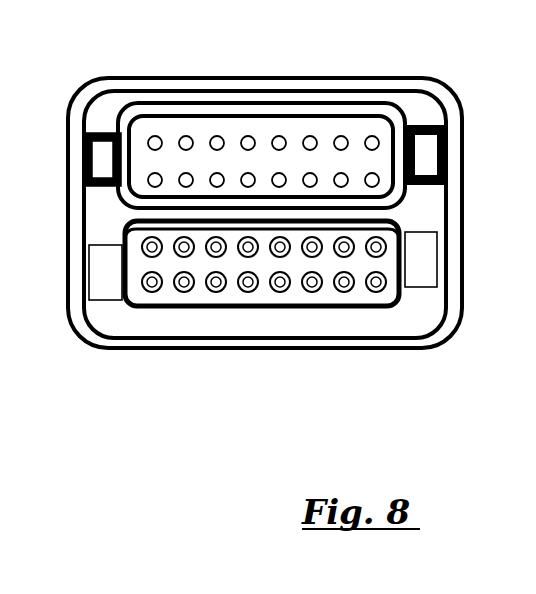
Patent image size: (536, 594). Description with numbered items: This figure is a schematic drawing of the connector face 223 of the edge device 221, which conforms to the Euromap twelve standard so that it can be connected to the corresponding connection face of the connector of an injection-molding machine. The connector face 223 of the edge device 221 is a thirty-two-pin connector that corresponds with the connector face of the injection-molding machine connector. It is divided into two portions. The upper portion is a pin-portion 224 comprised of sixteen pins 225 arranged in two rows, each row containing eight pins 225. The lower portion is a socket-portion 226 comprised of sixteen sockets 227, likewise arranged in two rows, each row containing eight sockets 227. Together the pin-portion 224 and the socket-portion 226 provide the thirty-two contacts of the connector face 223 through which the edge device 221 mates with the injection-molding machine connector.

The edge device 221 is at (122, 77).
The connector face 223 is at (223, 92).
The pin-portion 224 is at (260, 128).
The pins 225 is at (315, 173).
The socket-portion 226 is at (168, 297).
The sockets 227 is at (215, 250).